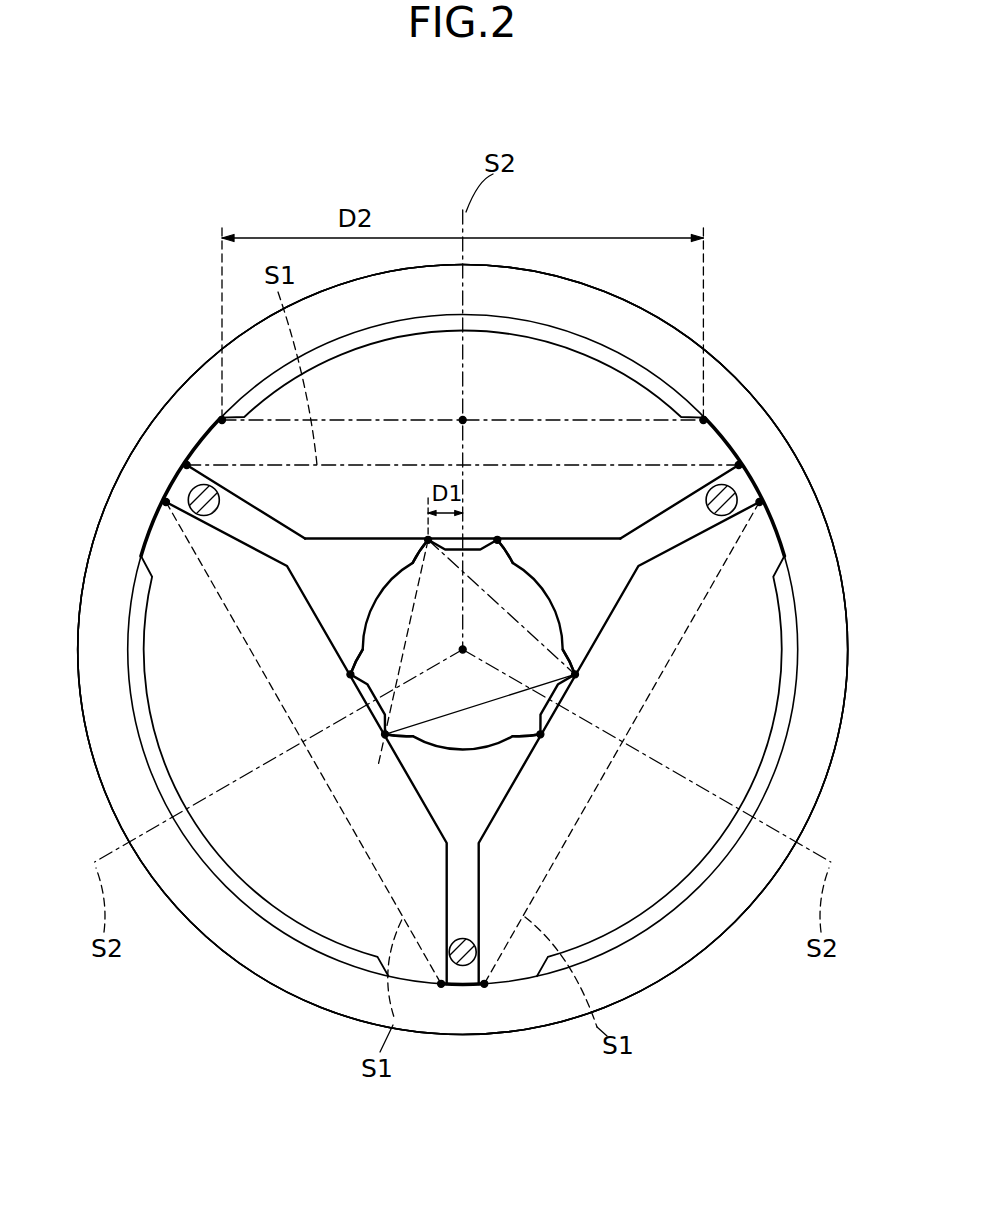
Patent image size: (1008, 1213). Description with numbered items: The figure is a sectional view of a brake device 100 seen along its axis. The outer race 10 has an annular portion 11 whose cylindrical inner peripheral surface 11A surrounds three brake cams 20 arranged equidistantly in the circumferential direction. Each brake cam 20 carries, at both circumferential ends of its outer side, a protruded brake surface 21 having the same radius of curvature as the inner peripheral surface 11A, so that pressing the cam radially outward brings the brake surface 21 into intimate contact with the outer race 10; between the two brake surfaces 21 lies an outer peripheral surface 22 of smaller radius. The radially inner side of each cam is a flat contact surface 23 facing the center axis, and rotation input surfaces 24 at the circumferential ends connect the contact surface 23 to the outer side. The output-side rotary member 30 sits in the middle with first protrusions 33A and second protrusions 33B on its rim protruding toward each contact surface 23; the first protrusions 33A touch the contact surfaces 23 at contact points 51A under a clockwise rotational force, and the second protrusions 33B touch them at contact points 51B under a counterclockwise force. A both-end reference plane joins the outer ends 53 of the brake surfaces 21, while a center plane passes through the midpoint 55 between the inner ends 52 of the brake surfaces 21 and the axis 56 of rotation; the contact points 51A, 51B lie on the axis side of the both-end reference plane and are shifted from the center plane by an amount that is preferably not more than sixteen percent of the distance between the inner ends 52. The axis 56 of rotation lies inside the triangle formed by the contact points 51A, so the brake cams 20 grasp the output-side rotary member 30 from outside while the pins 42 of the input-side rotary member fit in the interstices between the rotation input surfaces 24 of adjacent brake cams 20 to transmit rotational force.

The optical unit 100 is at (758, 265).
The outer race 10 is at (715, 358).
The annular portion 11 is at (845, 595).
The inner peripheral surface 11A is at (700, 875).
The brake cam 20 is at (573, 350).
The brake surface 21 is at (206, 434).
The outer peripheral surface 22 is at (628, 373).
The contact surface 23 is at (575, 539).
The rotation input surface 24 is at (252, 508).
The output-side rotary member 30 is at (463, 763).
The first protrusion 33A is at (413, 550).
The second protrusion 33B is at (512, 553).
The pin 42 is at (166, 502).
The contact point 51A is at (428, 540).
The contact point 51B is at (497, 540).
The inner end 52 is at (222, 420).
The outer end 53 is at (187, 465).
The midpoint 55 is at (463, 420).
The axis of rotation 56 is at (463, 650).